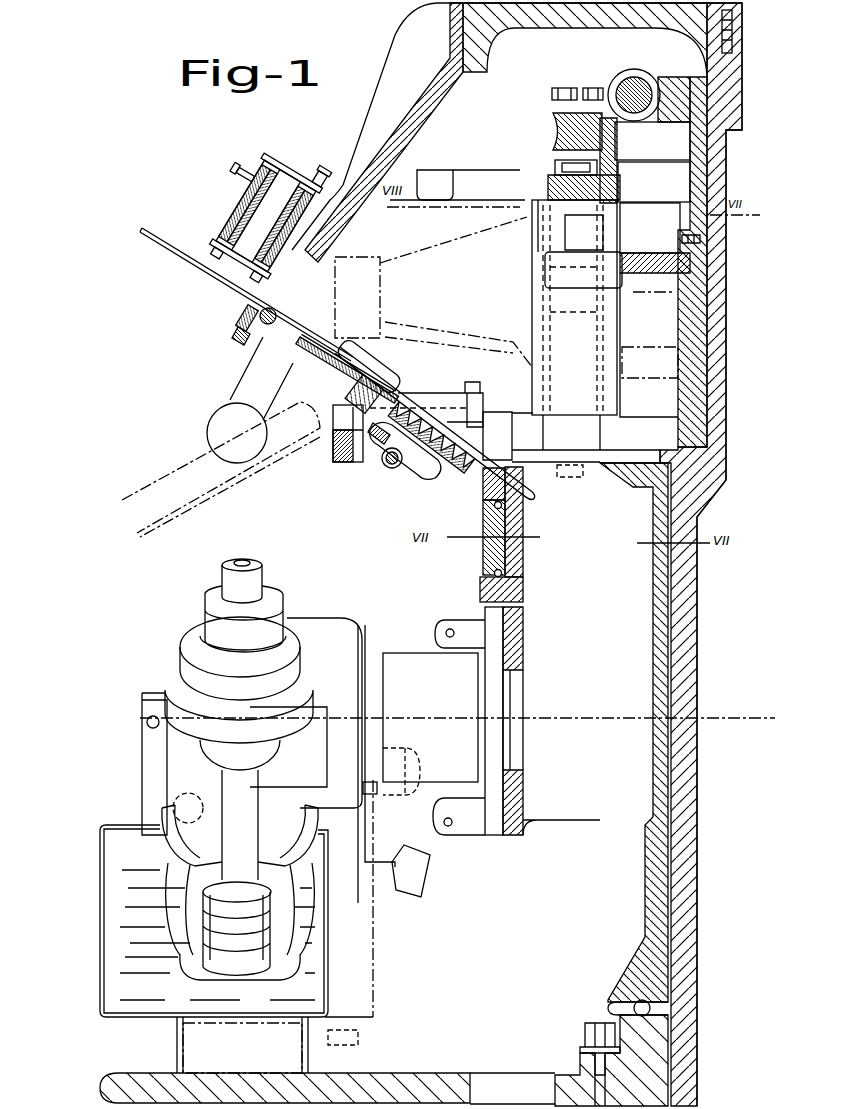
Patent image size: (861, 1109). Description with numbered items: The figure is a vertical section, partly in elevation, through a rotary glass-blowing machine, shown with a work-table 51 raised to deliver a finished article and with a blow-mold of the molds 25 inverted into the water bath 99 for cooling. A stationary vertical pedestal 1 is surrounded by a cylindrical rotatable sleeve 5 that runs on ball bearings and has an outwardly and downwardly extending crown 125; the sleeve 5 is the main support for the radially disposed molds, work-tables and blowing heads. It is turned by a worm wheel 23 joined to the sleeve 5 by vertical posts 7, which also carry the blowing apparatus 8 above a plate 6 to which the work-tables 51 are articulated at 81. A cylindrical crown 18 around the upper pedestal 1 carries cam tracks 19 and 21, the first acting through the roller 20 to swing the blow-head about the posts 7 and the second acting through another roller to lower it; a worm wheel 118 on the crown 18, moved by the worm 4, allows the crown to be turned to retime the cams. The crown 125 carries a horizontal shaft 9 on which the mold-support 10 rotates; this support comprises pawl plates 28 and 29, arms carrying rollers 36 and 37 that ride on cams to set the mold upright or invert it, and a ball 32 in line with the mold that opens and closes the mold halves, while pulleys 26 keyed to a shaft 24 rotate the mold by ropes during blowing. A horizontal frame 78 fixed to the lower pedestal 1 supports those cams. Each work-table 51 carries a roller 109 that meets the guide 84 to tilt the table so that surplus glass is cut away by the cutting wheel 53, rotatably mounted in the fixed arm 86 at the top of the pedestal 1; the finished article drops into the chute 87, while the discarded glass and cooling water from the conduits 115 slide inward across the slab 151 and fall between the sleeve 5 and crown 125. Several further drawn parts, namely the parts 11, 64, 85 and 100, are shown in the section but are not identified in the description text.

The stationary vertical column or pedestal 1 is at (721, 274).
The worm 4 is at (622, 70).
The cylindrical rotatable sleeve 5 is at (672, 562).
The plate 6 is at (590, 455).
The vertical posts 7 is at (562, 435).
The blowing apparatus 8 is at (362, 268).
The horizontal shaft 9 is at (495, 702).
The mold-support 10 is at (190, 680).
The bearing bush 11 is at (490, 545).
The cylindrical crown 18 is at (690, 187).
The cam track 19 is at (638, 258).
The roller 20 is at (543, 272).
The cam track 21 is at (640, 356).
The worm wheel 23 is at (553, 130).
The shaft 24 is at (223, 753).
The molds 25 is at (245, 925).
The pulleys 26 is at (180, 710).
The pawl plate 28 is at (165, 840).
The pawl plate 29 is at (186, 853).
The ball 32 is at (250, 565).
The roller 36 is at (413, 762).
The roller 37 is at (430, 882).
The work-table 51 is at (336, 370).
The cutting wheel 53 is at (196, 263).
The stop block 64 is at (340, 462).
The horizontal frame 78 is at (420, 1073).
The articulation 81 is at (390, 469).
The guide or cam 84 is at (240, 333).
The lever arm with ball 85 is at (253, 392).
The fixed arm 86 is at (400, 143).
The inclined channel or chute 87 is at (232, 480).
The water bath 99 is at (145, 987).
The bracket 100 is at (433, 173).
The roller 109 is at (240, 310).
The conduits 115 is at (262, 326).
The worm wheel 118 is at (672, 120).
The crown 125 is at (518, 583).
The trough or slab 151 is at (460, 478).